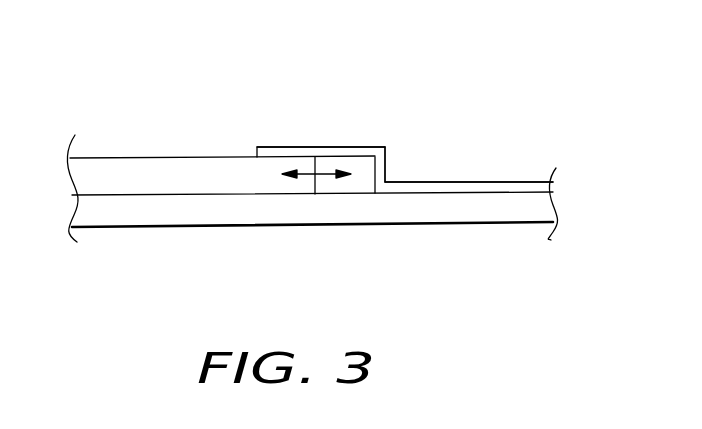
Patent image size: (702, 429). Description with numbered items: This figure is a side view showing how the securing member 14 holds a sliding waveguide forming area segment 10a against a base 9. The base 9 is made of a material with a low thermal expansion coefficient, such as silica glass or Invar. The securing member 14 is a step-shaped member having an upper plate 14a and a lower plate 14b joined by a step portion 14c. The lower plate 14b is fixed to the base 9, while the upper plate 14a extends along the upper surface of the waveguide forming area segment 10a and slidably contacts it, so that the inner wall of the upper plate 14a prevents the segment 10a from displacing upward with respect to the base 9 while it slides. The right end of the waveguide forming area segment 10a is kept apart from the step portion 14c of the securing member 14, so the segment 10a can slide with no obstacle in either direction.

The base 9 is at (229, 213).
The waveguide forming area segment 10a is at (118, 167).
The securing member 14 is at (343, 134).
The upper plate 14a is at (372, 147).
The lower plate 14b is at (460, 185).
The step portion 14c is at (386, 165).